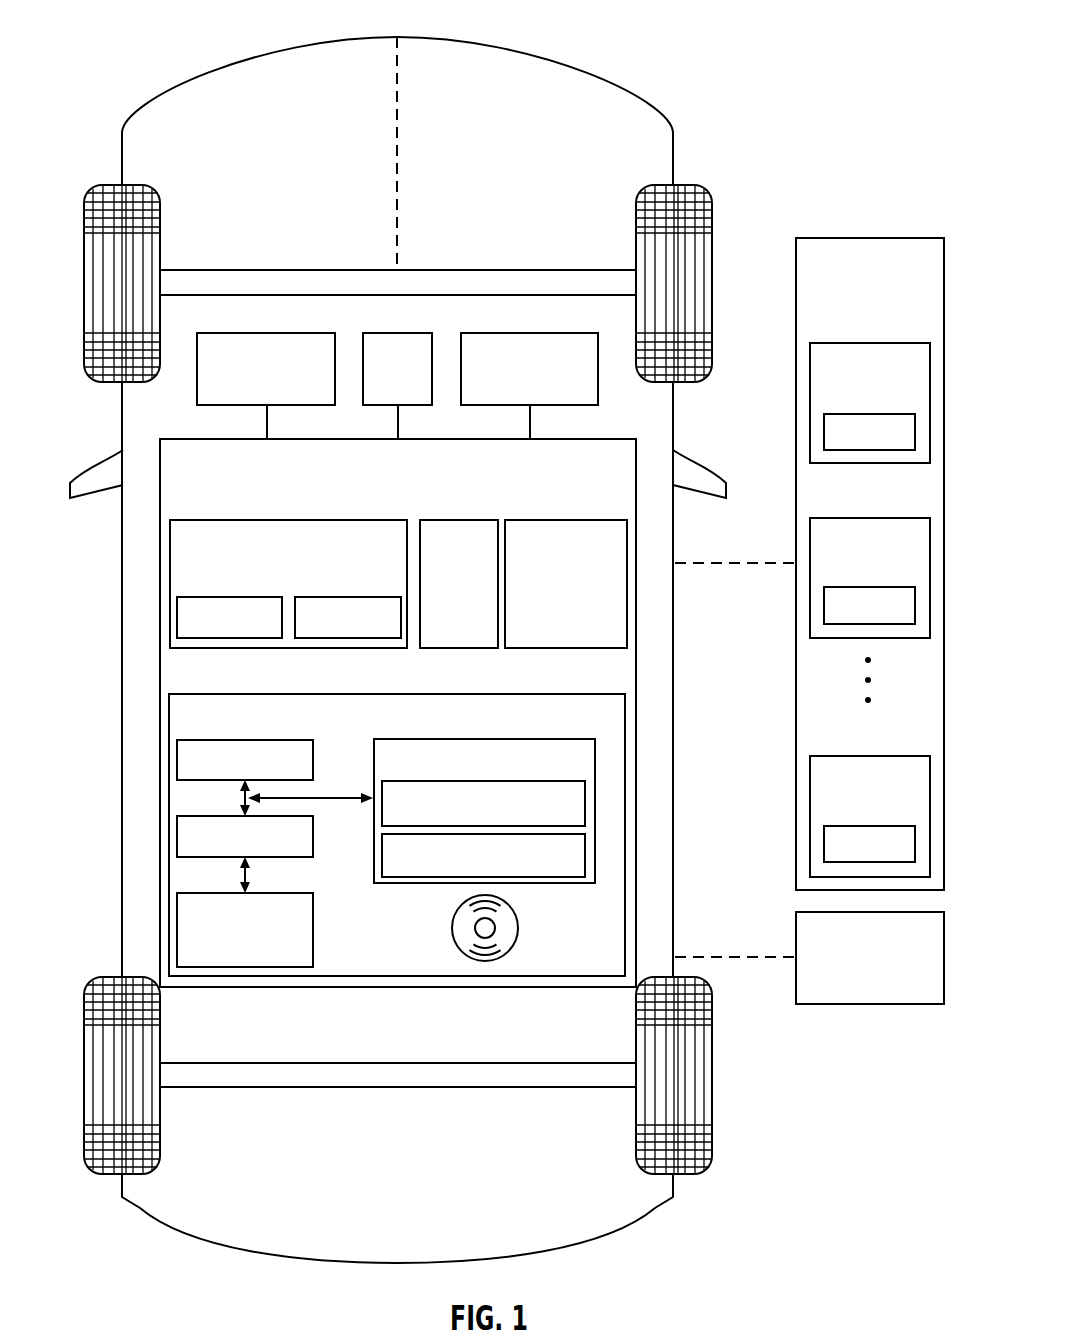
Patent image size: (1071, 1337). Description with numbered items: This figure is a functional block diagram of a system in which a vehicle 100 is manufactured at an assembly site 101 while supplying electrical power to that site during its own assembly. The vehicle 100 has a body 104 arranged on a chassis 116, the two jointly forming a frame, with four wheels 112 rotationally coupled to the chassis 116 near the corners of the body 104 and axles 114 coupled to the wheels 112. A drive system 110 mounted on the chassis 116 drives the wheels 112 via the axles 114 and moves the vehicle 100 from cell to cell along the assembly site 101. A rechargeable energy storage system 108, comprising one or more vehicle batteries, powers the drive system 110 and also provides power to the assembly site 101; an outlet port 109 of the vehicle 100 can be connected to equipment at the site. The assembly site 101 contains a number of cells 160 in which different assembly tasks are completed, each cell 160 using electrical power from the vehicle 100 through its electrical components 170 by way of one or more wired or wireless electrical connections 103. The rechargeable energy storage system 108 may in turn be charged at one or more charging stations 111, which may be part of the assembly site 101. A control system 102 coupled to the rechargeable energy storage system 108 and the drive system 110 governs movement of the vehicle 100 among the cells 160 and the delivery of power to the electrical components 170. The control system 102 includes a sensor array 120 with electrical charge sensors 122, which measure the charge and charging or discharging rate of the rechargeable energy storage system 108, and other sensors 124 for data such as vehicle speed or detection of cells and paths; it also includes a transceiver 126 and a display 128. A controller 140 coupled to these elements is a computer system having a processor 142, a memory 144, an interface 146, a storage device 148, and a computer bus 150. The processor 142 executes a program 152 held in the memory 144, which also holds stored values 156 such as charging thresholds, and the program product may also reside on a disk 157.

The vehicle 100 is at (555, 78).
The assembly site 101 is at (873, 238).
The control system 102 is at (570, 438).
The electrical connections 103 is at (745, 566).
The body 104 is at (122, 536).
The rechargeable energy storage system 108 is at (532, 331).
The outlet port 109 is at (398, 331).
The drive system 110 is at (268, 331).
The charging stations 111 is at (875, 1004).
The wheels 112 is at (93, 258).
The axles 114 is at (202, 282).
The chassis 116 is at (410, 150).
The sensor array 120 is at (340, 519).
The electrical charge sensors 122 is at (217, 597).
The other sensors 124 is at (333, 597).
The transceiver 126 is at (435, 519).
The display 128 is at (558, 519).
The controller 140 is at (560, 693).
The processor 142 is at (177, 760).
The memory 144 is at (595, 748).
The interface 146 is at (177, 838).
The storage device 148 is at (177, 908).
The computer bus 150 is at (245, 799).
The program 152 is at (585, 797).
The stored values 156 is at (585, 852).
The disk 157 is at (520, 928).
The cells 160 is at (862, 343).
The electrical components 170 is at (848, 414).